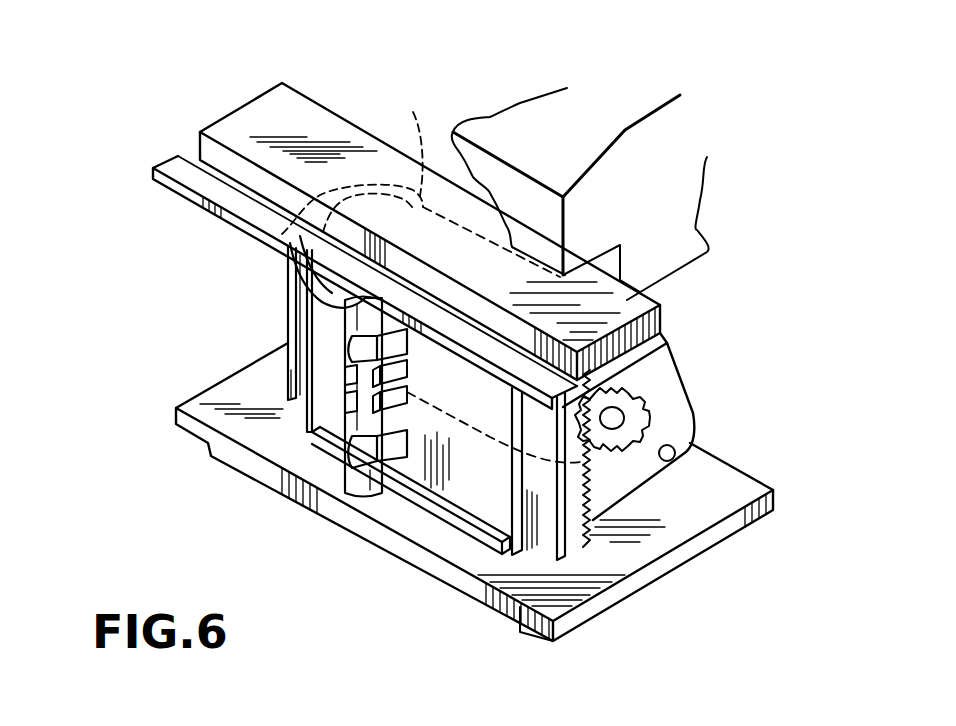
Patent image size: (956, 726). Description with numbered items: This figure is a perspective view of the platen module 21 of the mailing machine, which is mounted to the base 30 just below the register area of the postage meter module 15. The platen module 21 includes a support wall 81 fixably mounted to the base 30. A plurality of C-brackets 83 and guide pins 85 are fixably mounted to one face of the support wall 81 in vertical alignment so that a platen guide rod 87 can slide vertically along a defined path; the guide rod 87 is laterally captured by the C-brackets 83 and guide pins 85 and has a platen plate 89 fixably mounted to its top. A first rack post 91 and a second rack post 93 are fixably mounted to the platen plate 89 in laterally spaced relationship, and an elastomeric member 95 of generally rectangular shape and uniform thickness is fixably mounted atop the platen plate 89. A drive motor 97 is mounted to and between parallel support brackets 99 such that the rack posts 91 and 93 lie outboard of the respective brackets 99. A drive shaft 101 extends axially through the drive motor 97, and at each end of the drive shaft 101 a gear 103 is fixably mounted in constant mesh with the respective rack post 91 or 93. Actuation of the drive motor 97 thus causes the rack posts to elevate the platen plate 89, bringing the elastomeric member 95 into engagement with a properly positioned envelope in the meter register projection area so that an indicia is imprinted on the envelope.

The postage meter module 15 is at (672, 128).
The platen module 21 is at (170, 319).
The base 30 is at (729, 488).
The support wall 81 is at (482, 510).
The C-brackets 83 is at (360, 353).
The guide pins 85 is at (408, 368).
The platen guide rod 87 is at (363, 313).
The platen plate 89 is at (667, 347).
The first rack post 91 is at (502, 598).
The second rack post 93 is at (292, 373).
The elastomeric member 95 is at (252, 115).
The drive motor 97 is at (400, 146).
The support brackets 99 is at (693, 408).
The drive shaft 101 is at (637, 378).
The gear 103 is at (282, 231).